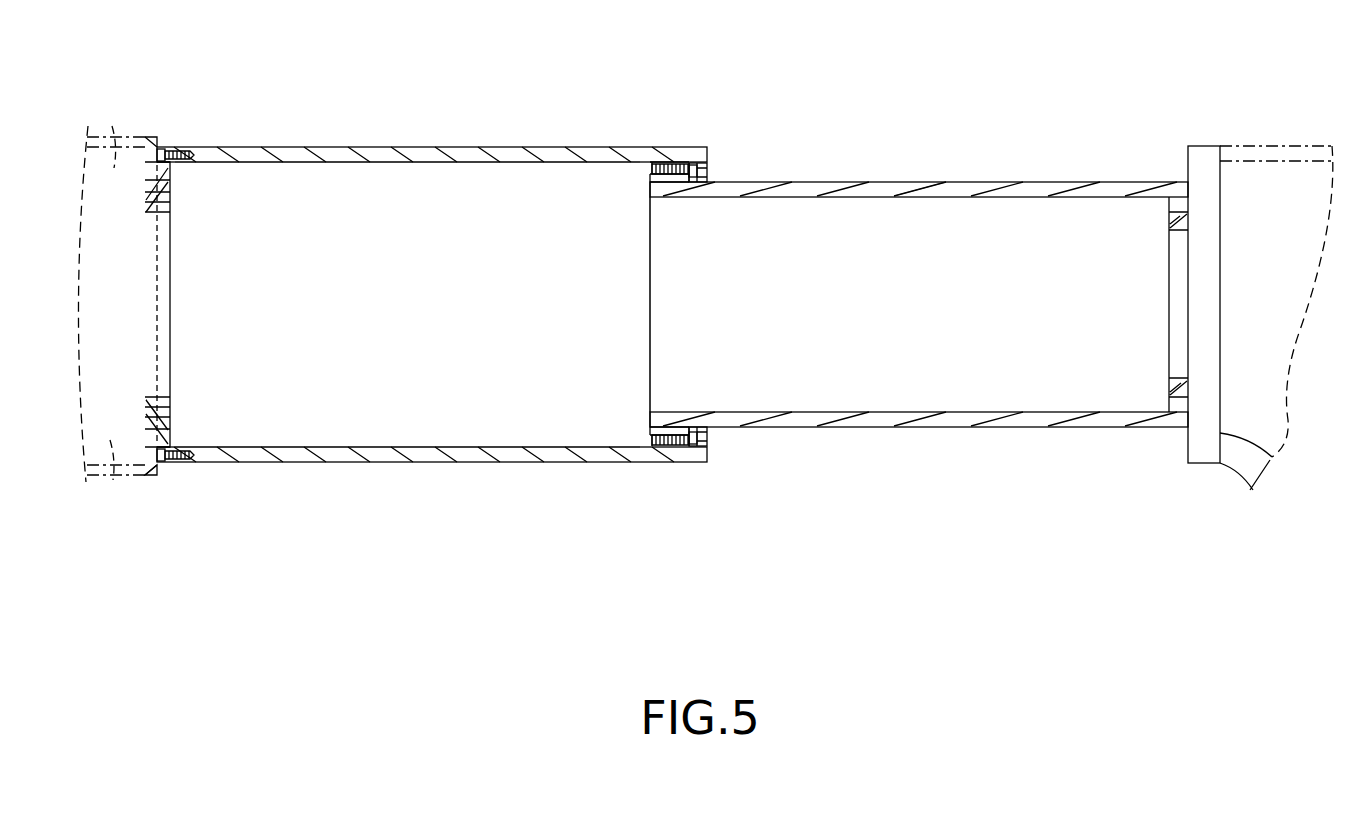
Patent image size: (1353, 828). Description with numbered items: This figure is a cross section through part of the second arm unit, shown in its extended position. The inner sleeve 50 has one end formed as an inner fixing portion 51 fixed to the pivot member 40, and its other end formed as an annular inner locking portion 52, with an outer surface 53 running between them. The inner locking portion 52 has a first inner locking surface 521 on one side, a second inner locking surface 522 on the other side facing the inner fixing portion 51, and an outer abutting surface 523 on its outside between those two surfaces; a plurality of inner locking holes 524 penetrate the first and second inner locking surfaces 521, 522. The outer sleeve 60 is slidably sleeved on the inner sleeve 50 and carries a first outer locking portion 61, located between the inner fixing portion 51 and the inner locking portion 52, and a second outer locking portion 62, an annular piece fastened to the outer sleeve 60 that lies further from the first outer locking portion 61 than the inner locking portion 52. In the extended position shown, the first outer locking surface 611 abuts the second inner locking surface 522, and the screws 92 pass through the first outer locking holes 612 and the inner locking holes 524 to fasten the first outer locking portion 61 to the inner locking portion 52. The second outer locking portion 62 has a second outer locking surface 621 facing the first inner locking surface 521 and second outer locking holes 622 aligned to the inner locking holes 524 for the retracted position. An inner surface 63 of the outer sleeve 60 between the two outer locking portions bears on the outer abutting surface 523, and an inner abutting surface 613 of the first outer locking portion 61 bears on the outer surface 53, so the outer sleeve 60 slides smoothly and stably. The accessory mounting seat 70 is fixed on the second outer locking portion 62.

The pivot member 40 is at (1258, 172).
The inner sleeve 50 is at (1040, 194).
The inner fixing portion 51 is at (1184, 180).
The inner locking portion 52 is at (663, 186).
The outer surface 53 is at (963, 183).
The outer sleeve 60 is at (413, 147).
The first outer locking portion 61 is at (710, 437).
The second outer locking portion 62 is at (214, 148).
The inner surface 63 is at (656, 163).
The accessory mounting seat 70 is at (113, 147).
The screws 92 is at (681, 166).
The first inner locking surface 521 is at (645, 186).
The second inner locking surface 522 is at (669, 304).
The outer abutting surface 523 is at (669, 168).
The inner locking holes 524 is at (668, 436).
The first outer locking surface 611 is at (702, 182).
The first outer locking holes 612 is at (708, 170).
The inner abutting surface 613 is at (700, 430).
The second outer locking surface 621 is at (172, 192).
The second outer locking holes 622 is at (170, 176).